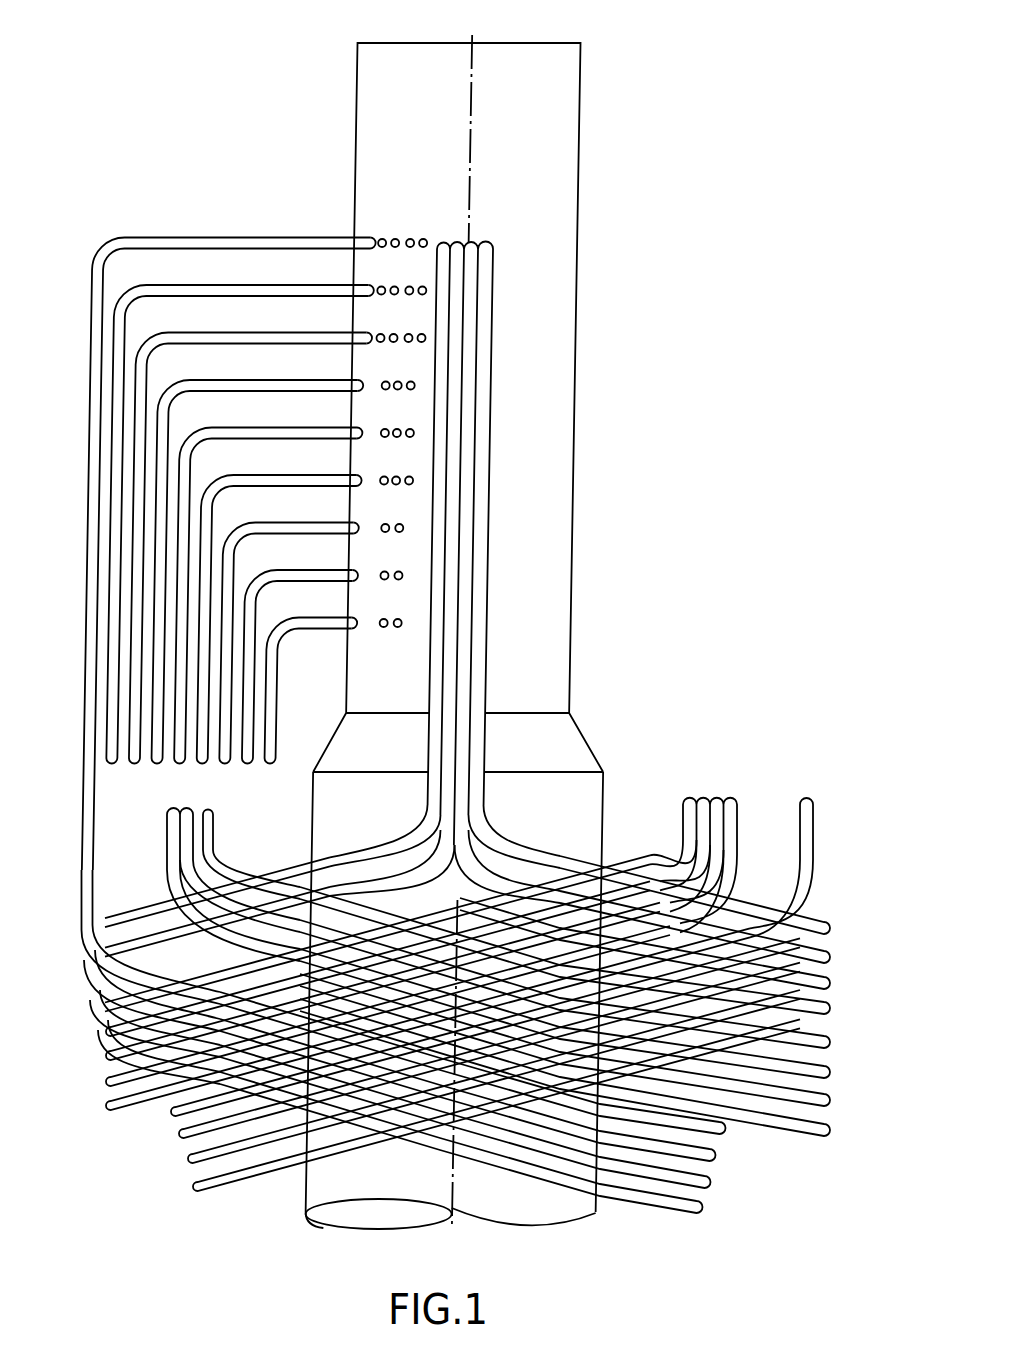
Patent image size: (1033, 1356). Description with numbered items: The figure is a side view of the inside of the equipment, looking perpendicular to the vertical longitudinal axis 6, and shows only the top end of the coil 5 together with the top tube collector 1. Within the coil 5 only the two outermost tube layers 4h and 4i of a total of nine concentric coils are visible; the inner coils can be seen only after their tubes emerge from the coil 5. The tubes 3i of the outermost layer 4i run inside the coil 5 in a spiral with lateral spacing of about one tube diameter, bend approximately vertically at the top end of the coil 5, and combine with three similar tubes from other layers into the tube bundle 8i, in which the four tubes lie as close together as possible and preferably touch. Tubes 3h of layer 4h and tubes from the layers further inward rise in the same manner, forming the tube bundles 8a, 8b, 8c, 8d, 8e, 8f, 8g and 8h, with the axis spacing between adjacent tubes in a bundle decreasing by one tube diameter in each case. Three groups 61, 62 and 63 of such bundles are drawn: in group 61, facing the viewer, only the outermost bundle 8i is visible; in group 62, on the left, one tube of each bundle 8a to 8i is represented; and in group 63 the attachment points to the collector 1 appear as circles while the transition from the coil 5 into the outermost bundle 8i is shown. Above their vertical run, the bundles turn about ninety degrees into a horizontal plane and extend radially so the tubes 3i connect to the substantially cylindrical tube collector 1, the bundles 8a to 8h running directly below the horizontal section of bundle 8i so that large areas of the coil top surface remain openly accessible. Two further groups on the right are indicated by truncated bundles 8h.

The tube collector 1 is at (543, 404).
The coil 5 is at (592, 1071).
The longitudinal axis 6 is at (472, 66).
The group of tube bundles 61 is at (491, 230).
The group of tube bundles 62 is at (290, 232).
The group of tube bundles 63 is at (406, 230).
The tube bundle 8a is at (288, 622).
The tube bundle 8b is at (285, 575).
The tube bundle 8c is at (285, 528).
The tube bundle 8d is at (281, 480).
The tube bundle 8e is at (282, 433).
The tube bundle 8f is at (283, 386).
The tube bundle 8g is at (209, 338).
The tube bundle 8h is at (806, 794).
The tube bundle 8i is at (207, 798).
The tubes 3h is at (103, 1108).
The tubes 3i is at (838, 1010).
The tube layer 4h is at (378, 843).
The tube layer 4i is at (530, 840).